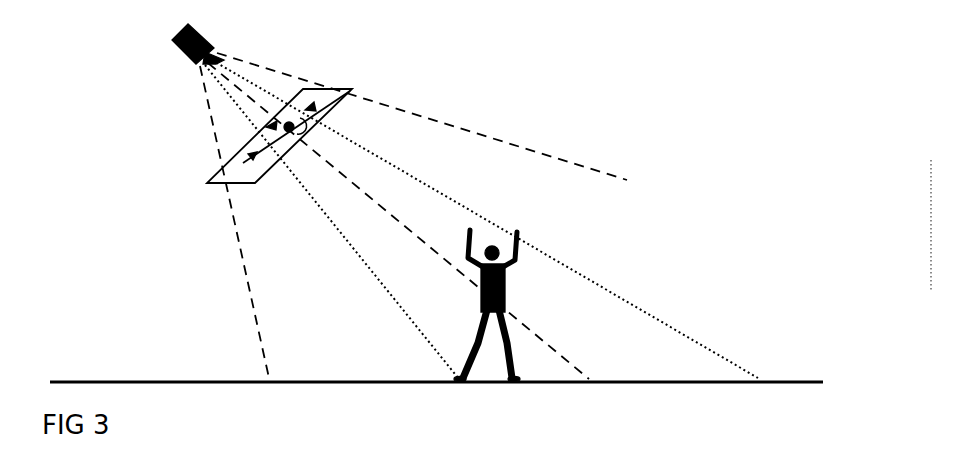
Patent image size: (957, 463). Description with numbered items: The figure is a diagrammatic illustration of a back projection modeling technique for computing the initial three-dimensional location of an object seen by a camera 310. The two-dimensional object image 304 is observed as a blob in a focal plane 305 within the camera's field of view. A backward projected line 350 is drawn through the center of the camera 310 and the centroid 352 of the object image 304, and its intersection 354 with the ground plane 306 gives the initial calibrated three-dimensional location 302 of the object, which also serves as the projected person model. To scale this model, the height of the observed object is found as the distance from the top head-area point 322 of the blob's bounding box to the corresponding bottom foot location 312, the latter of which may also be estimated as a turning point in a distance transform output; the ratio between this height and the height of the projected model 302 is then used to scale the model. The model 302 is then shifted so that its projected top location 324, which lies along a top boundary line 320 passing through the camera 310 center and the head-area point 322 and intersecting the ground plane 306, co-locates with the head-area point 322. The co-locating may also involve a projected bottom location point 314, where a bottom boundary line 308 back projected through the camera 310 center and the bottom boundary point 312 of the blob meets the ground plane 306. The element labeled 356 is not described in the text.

The initial calibrated 3D location 302 is at (480, 313).
The object image 304 is at (289, 120).
The focal plane 305 is at (207, 183).
The ground plane 306 is at (107, 380).
The bottom boundary line 308 is at (359, 258).
The camera 310 is at (182, 50).
The foot location 312 is at (236, 177).
The projected bottom location point 314 is at (456, 383).
The top boundary line 320 is at (690, 338).
The top head-area point 322 is at (352, 90).
The projected top location 324 is at (512, 232).
The backward projected line 350 is at (370, 197).
The centroid 352 is at (272, 123).
The intersection 354 is at (587, 383).
The torso of user 356 is at (482, 288).